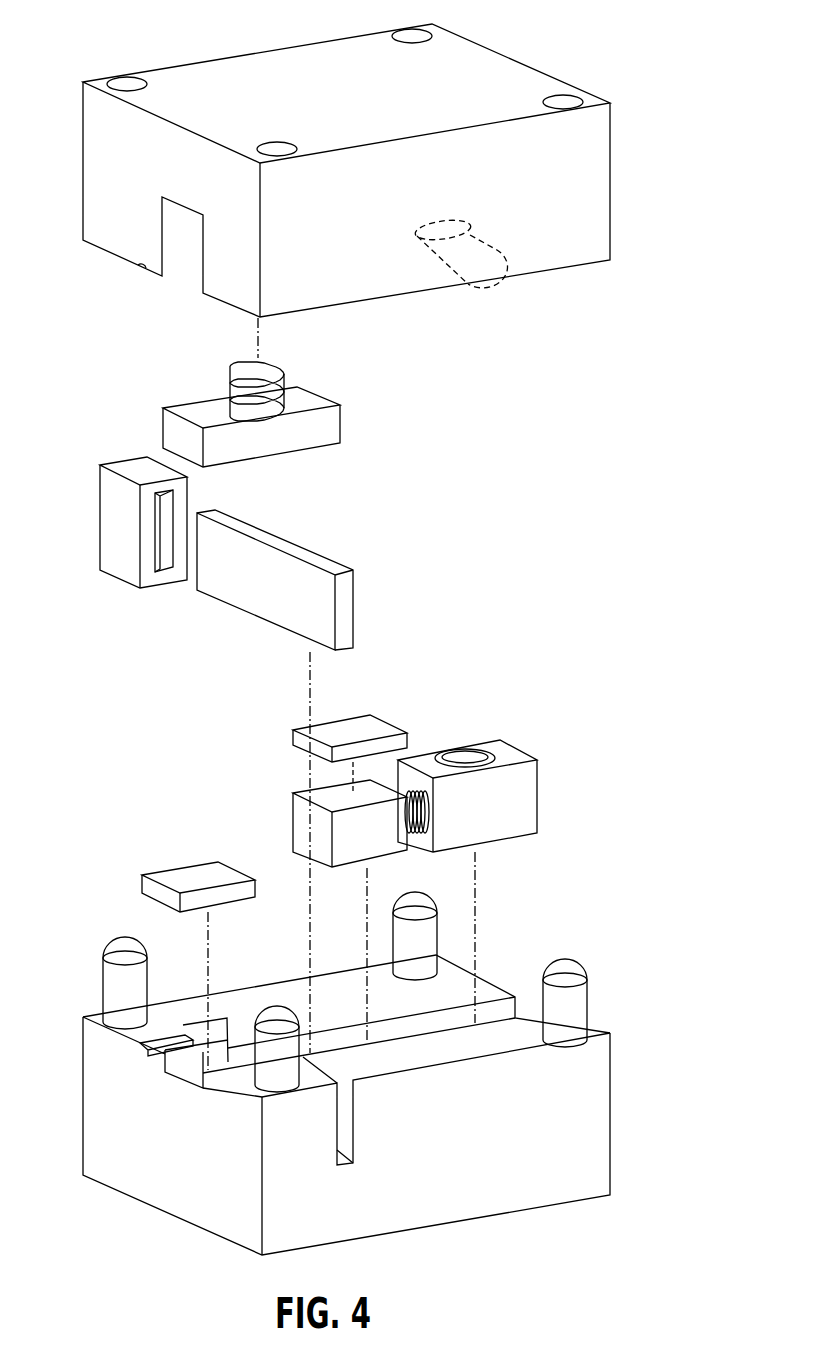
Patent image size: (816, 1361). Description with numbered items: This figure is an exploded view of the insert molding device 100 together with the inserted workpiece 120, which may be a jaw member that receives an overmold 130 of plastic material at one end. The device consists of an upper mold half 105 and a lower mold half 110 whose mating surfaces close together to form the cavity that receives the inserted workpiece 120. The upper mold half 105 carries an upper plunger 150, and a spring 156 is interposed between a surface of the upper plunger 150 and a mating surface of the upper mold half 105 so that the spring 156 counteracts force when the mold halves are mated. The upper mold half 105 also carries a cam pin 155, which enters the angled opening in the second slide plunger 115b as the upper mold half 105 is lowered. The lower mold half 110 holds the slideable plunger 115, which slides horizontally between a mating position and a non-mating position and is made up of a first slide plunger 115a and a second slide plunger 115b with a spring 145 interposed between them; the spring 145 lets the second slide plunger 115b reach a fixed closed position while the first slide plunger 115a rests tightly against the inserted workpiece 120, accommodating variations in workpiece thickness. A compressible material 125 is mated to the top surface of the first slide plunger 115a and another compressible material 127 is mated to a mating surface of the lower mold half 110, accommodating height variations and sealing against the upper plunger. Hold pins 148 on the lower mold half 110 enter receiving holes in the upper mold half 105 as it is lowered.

The insert molding device 100 is at (576, 590).
The upper mold half 105 is at (542, 60).
The cam pin 155 is at (500, 258).
The spring 156 is at (224, 381).
The upper plunger 150 is at (173, 435).
The overmold 130 is at (112, 542).
The inserted workpiece 120 is at (278, 608).
The compressible material 125 is at (307, 743).
The first slide plunger 115a is at (303, 828).
The spring 145 is at (423, 812).
The second slide plunger 115b is at (541, 803).
The slideable plunger 115 is at (536, 748).
The compressible material 127 is at (175, 872).
The lower mold half 110 is at (602, 1026).
The hold pins 148 is at (592, 983).